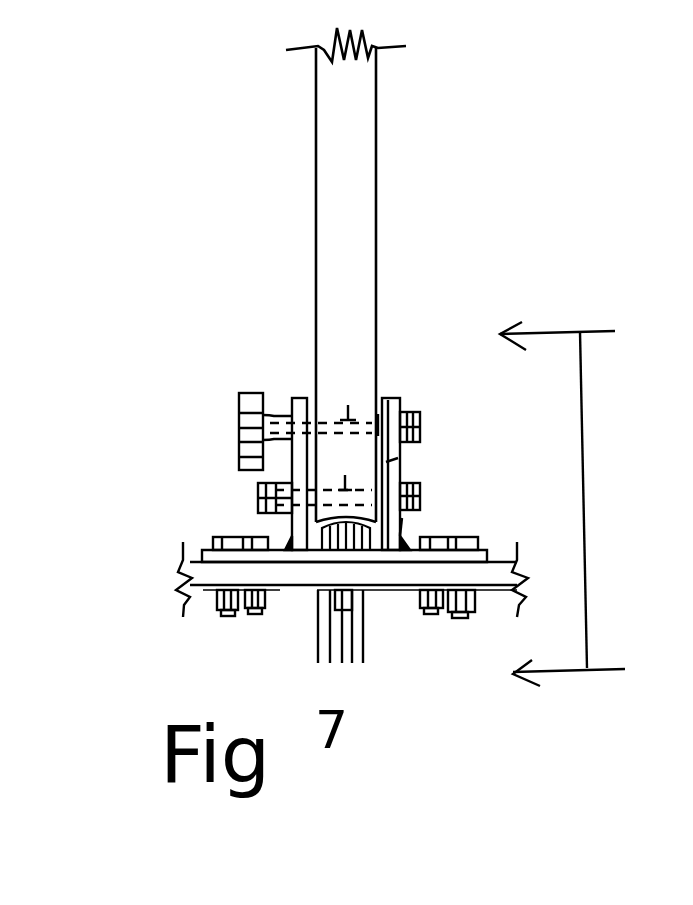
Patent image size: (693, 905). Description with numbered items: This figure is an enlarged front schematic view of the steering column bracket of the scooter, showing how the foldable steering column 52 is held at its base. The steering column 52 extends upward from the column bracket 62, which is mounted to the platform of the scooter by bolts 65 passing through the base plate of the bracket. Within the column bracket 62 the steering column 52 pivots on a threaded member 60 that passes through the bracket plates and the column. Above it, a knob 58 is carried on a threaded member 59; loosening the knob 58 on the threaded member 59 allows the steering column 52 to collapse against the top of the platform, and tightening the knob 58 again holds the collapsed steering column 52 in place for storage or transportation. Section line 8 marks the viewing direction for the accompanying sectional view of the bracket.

The section line 8— 8 is at (575, 505).
The foldable steering column 52 is at (308, 228).
The knob 58 is at (238, 412).
The threaded member 59 is at (356, 392).
The threaded member 60 is at (358, 475).
The column bracket 62 is at (400, 527).
The bolts 65 is at (235, 540).